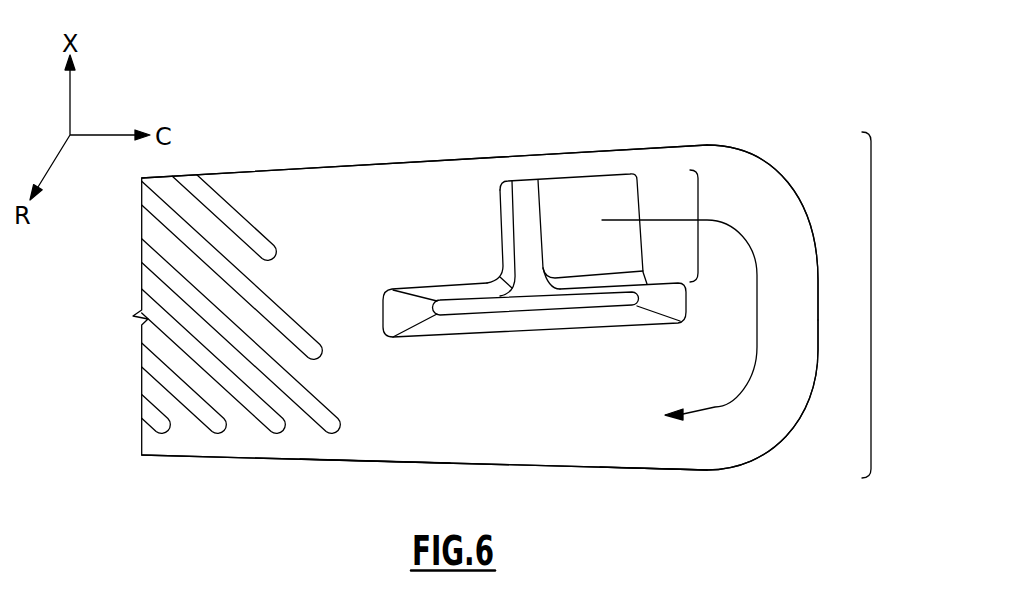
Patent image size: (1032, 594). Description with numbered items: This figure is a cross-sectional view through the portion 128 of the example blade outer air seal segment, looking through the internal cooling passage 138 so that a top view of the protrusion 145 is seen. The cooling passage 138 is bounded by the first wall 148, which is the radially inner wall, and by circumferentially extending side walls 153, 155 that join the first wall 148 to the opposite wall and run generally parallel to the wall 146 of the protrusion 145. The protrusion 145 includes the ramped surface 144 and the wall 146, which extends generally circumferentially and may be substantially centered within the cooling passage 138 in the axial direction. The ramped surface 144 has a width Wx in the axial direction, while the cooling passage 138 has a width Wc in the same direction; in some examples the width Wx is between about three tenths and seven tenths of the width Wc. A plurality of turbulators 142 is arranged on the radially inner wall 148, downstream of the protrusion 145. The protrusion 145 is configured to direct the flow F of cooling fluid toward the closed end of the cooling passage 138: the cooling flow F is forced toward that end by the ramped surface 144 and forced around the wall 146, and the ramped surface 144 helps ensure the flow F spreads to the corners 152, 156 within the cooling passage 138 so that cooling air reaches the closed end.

The portion 128 is at (772, 127).
The internal cooling passage 138 is at (673, 453).
The turbulators 142 is at (262, 433).
The ramped surface 144 is at (596, 197).
The protrusion 145 is at (528, 192).
The wall 146 is at (470, 307).
The first wall 148 is at (380, 437).
The corner 152 is at (787, 183).
The side wall 153 is at (382, 163).
The side wall 155 is at (525, 468).
The corner 156 is at (783, 432).
The flow of coolant F is at (757, 313).
The width of the ramped surface Wx is at (698, 195).
The width of the cooling passage Wc is at (871, 298).